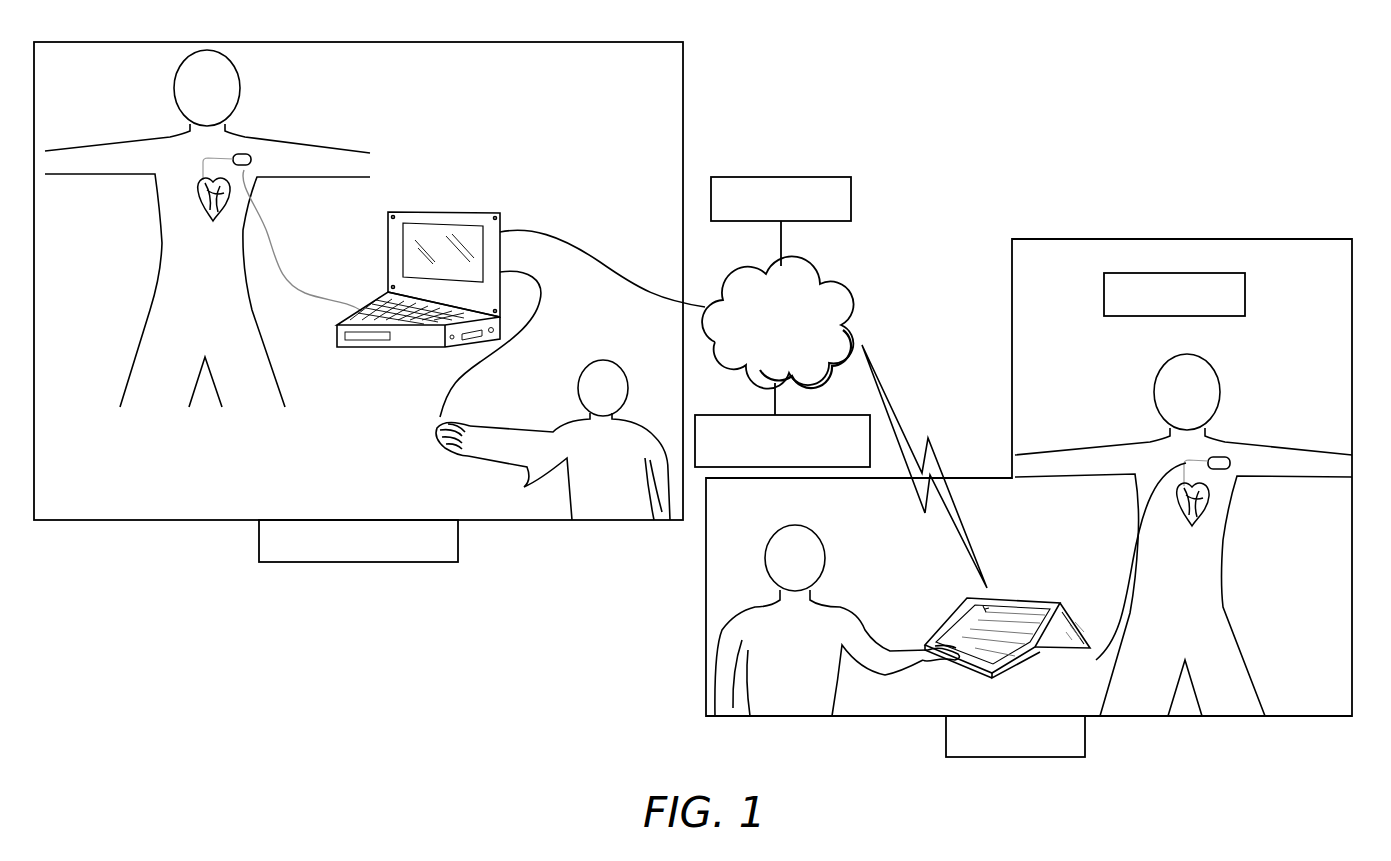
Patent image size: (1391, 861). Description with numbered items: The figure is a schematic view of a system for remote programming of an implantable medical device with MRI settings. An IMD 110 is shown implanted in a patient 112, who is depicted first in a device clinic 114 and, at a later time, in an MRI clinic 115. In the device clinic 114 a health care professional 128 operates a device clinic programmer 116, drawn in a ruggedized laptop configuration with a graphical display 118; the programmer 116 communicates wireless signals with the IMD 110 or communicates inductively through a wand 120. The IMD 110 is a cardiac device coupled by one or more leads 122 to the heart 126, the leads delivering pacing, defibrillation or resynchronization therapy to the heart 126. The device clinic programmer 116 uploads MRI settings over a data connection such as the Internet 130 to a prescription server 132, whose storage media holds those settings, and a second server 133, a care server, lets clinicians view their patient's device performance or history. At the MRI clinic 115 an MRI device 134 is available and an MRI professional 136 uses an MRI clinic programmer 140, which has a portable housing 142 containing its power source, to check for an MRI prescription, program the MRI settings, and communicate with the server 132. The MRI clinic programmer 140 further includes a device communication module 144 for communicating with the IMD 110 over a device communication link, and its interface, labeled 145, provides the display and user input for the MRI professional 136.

The IMD 110 is at (247, 148).
The patient 112 is at (74, 158).
The device clinic 114 is at (681, 45).
The MRI clinic 115 is at (1322, 239).
The device clinic programmer 116 is at (393, 350).
The graphical display 118 is at (457, 233).
The wand 120 is at (297, 287).
The leads 122 is at (203, 165).
The heart 126 is at (210, 217).
The health care professional 128 is at (555, 431).
The Internet 130 is at (830, 270).
The server 132 is at (836, 177).
The second server 133 is at (845, 415).
The MRI device 134 is at (1228, 273).
The MRI professional 136 is at (843, 603).
The MRI clinic programmer 140 is at (1014, 600).
The housing 142 is at (1063, 602).
The device communication module 144 is at (1125, 548).
The tablet display interface 145 is at (1000, 652).